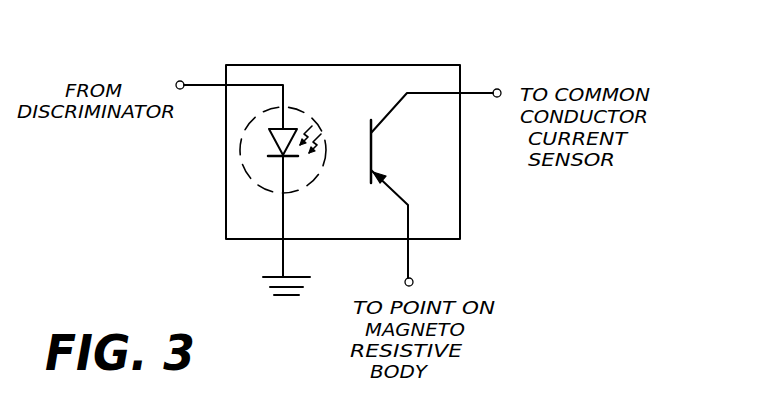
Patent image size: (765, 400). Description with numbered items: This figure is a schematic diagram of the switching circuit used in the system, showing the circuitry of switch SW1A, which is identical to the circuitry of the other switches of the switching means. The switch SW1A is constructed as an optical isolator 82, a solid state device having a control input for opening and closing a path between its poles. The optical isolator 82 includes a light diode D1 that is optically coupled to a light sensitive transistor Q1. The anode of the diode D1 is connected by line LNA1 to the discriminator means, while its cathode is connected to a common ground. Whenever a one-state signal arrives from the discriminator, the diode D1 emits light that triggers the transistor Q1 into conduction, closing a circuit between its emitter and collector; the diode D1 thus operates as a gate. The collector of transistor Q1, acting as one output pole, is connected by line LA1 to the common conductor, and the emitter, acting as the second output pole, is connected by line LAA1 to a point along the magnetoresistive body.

The switch SW1A is at (420, 58).
The line LNA1 is at (201, 84).
The light diode D1 is at (270, 141).
The light sensitive transistor Q1 is at (373, 157).
The line LA1 is at (478, 91).
The line LAA1 is at (412, 267).
The optical isolator 82 is at (341, 205).